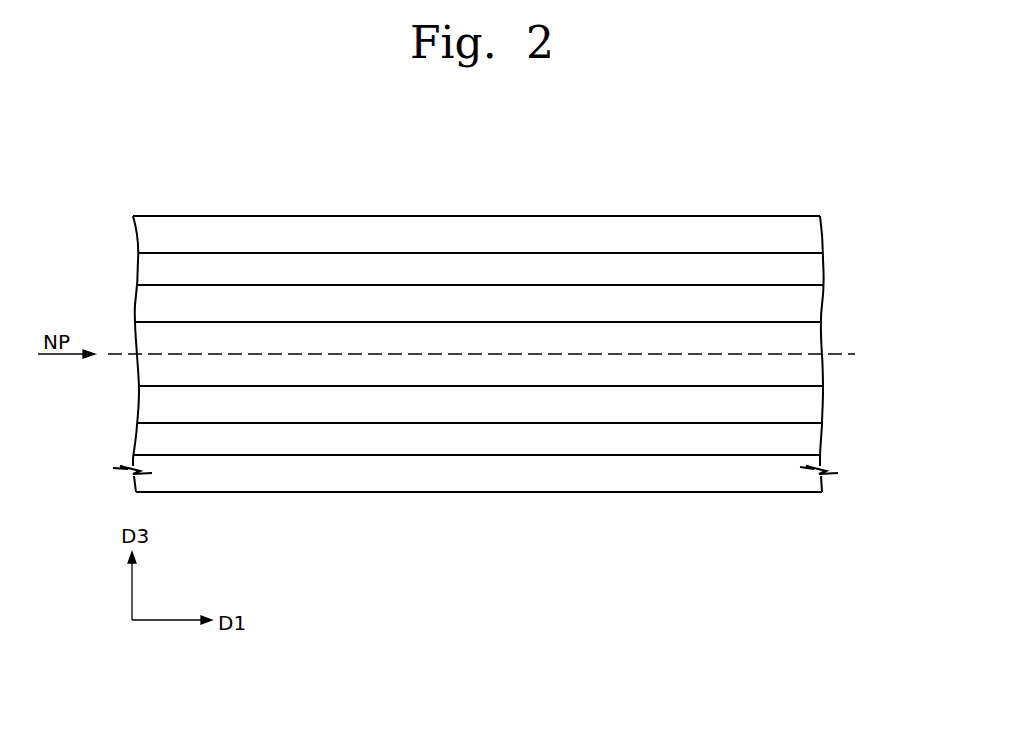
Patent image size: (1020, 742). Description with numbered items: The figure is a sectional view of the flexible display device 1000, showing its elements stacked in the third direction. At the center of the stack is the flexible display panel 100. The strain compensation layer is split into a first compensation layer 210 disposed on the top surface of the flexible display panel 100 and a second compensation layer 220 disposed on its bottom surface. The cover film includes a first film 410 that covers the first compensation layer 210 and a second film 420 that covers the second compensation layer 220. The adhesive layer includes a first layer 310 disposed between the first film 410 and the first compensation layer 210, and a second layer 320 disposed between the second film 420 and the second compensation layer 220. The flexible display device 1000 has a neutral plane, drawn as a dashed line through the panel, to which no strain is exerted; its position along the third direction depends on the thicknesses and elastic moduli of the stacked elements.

The flexible display device 1000 is at (685, 195).
The first film 410 is at (809, 236).
The first layer 310 is at (813, 270).
The first compensation layer 210 is at (813, 304).
The flexible display panel 100 is at (813, 366).
The second compensation layer 220 is at (813, 407).
The second layer 320 is at (809, 440).
The second film 420 is at (809, 462).